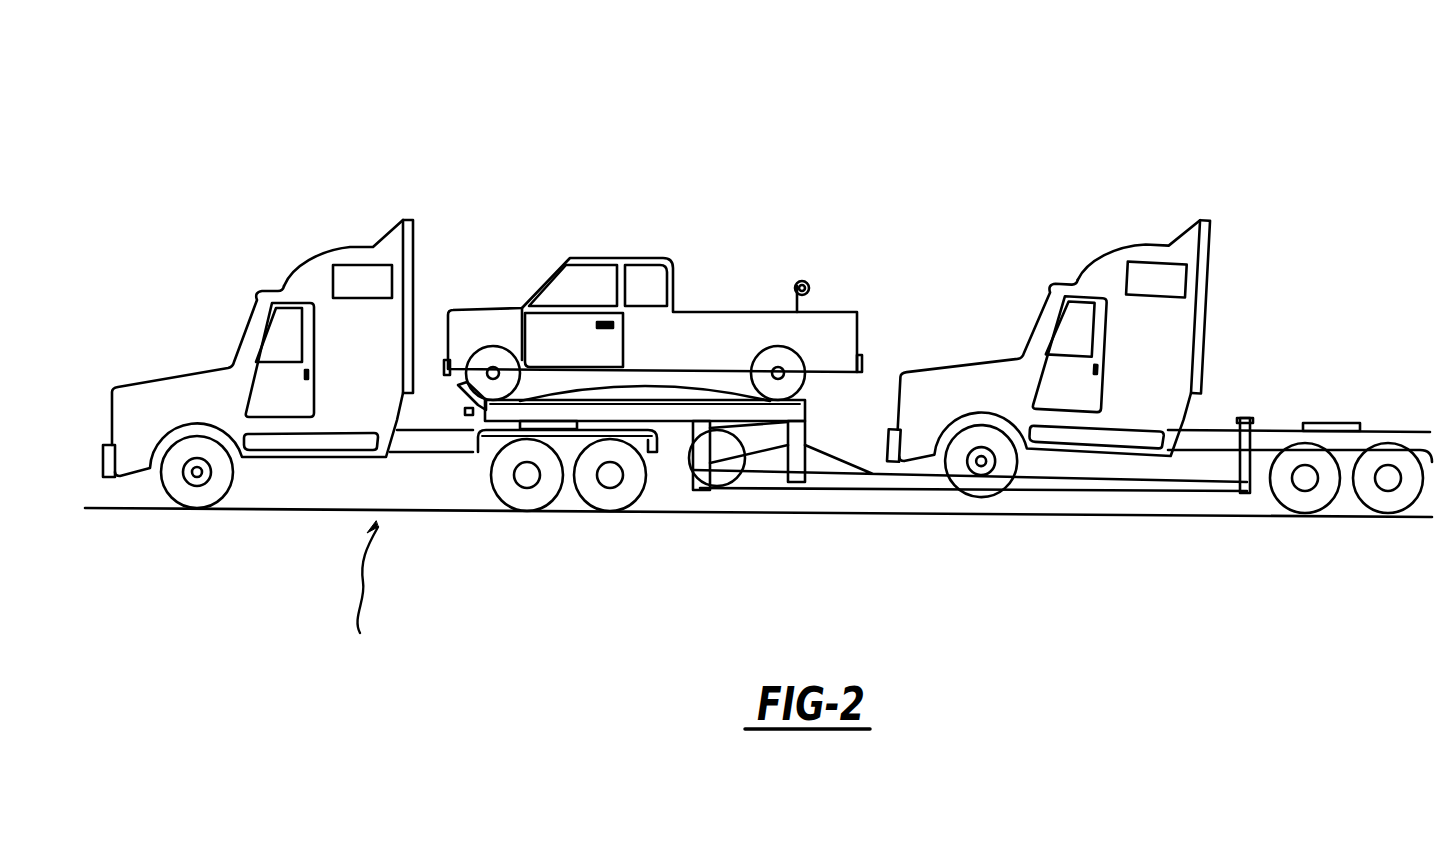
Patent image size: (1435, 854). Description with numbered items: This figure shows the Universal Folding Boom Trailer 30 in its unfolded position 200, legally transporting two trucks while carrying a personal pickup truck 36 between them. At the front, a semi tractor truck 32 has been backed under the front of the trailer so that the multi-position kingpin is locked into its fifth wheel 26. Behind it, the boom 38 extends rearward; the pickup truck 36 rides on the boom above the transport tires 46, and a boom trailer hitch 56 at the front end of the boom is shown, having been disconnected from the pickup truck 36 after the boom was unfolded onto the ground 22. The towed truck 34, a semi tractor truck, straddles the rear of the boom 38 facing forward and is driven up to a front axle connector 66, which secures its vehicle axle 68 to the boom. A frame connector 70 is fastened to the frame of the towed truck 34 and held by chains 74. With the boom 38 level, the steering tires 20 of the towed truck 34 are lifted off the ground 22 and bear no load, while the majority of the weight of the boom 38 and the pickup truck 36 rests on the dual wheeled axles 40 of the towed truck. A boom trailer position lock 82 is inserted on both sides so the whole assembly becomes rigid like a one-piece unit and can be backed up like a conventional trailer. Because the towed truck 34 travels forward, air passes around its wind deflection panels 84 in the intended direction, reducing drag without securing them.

The steering tires 20 is at (1159, 344).
The ground 22 is at (187, 594).
The fifth wheel 26 is at (567, 429).
The Universal Folding Boom Trailer 30 is at (473, 163).
The semi tractor truck 32 is at (243, 337).
The towed truck 34 is at (1083, 257).
The pickup truck 36 is at (911, 406).
The boom 38 is at (827, 448).
The dual wheeled axles 40 is at (1305, 503).
The transport tires 46 is at (717, 490).
The boom trailer hitch 56 is at (470, 415).
The front axle connector 66 is at (1003, 483).
The vehicle axle 68 is at (963, 490).
The frame connector 70 is at (1283, 385).
The chains 74 is at (1245, 418).
The boom trailer position lock 82 is at (703, 490).
The wind deflection panels 84 is at (1205, 233).
The unfolded position 200 is at (350, 590).